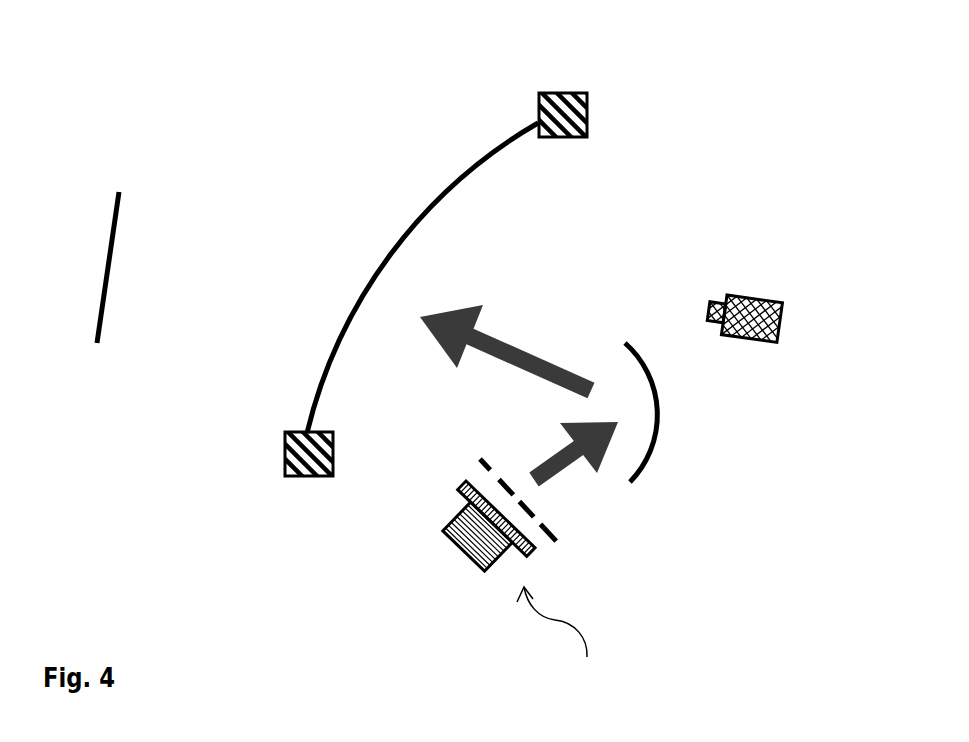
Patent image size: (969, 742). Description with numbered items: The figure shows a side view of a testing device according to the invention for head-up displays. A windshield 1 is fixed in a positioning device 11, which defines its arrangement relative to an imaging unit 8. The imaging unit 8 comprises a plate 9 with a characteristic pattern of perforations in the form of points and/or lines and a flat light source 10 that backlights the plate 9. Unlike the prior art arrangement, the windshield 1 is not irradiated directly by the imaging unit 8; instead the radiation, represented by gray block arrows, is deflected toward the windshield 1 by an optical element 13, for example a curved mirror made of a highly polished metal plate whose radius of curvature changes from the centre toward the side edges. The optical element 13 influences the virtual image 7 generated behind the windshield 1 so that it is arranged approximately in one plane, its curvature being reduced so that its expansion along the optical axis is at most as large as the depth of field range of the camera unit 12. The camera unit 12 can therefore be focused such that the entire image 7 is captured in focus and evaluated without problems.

The windshield 1 is at (467, 163).
The virtual image 7 is at (110, 235).
The imaging unit 8 is at (556, 637).
The plate 9 is at (485, 464).
The flat light source 10 is at (470, 542).
The positioning device 11 is at (539, 93).
The camera unit 12 is at (767, 320).
The optical element 13 is at (650, 453).